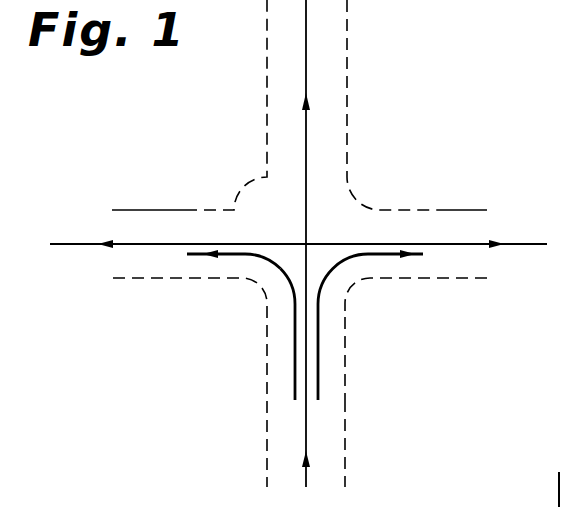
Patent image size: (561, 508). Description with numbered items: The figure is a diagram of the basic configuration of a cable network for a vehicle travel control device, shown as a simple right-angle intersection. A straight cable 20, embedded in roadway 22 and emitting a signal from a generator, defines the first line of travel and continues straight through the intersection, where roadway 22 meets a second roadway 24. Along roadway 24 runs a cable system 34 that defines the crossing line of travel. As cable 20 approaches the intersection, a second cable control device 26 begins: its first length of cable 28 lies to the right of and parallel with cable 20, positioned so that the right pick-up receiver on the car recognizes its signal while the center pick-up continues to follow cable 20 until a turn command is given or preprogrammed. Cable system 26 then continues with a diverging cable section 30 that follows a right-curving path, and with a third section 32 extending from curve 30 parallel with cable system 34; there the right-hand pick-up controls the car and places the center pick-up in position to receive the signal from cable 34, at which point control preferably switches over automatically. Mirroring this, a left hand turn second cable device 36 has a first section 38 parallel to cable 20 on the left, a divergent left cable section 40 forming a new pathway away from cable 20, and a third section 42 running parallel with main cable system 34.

The cable 20 is at (306, 137).
The roadway 22 is at (328, 467).
The second roadway 24 is at (387, 228).
The second cable control device 26 is at (326, 312).
The first length of cable 28 is at (318, 380).
The diverging cable section 30 is at (328, 272).
The third section 32 is at (398, 256).
The cable system 34 is at (470, 244).
The left hand turn second cable device 36 is at (286, 293).
The first section 38 is at (294, 372).
The divergent left cable section 40 is at (278, 266).
The third section 42 is at (227, 254).